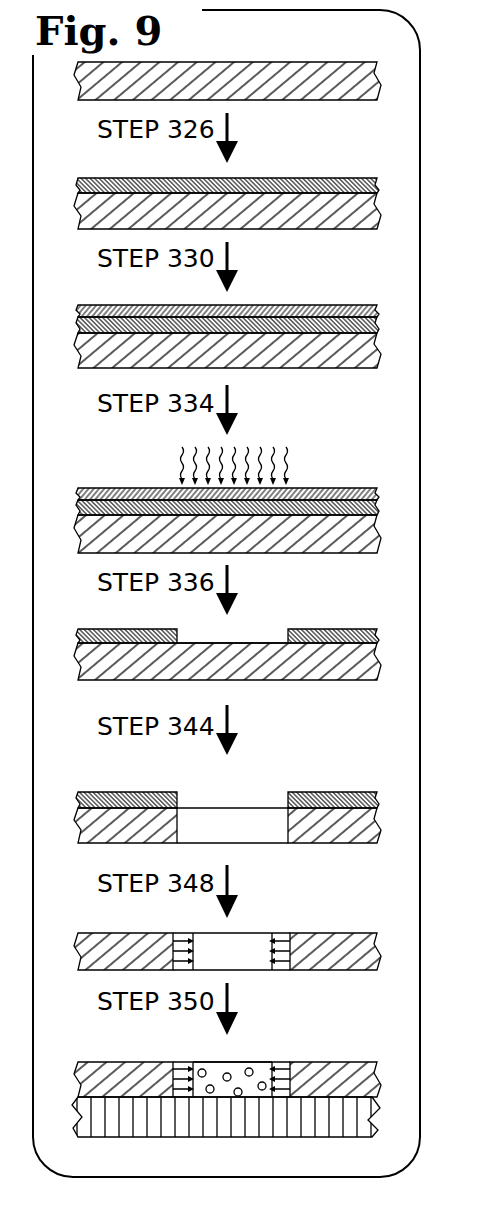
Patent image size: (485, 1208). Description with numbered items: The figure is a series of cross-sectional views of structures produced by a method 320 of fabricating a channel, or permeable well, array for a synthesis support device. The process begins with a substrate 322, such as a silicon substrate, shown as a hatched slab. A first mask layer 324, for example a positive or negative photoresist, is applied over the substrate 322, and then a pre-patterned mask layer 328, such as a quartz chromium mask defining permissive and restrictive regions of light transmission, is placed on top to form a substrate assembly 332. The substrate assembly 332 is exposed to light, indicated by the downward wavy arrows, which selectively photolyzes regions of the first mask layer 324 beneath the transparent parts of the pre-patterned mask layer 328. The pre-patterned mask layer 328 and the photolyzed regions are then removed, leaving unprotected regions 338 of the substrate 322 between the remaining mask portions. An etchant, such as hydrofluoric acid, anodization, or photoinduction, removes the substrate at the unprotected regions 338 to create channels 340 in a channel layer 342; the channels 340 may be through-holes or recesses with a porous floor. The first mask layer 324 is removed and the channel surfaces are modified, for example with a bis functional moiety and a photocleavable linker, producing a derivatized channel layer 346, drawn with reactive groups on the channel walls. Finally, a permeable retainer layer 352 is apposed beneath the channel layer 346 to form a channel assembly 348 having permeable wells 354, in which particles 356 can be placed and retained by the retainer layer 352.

The method 320 is at (288, 54).
The substrate 322 is at (88, 88).
The first mask layer 324 is at (143, 178).
The pre-patterned mask layer 328 is at (143, 306).
The substrate assembly 332 is at (70, 352).
The unprotected regions 338 is at (263, 642).
The channels 340 is at (285, 838).
The channel layer 342 is at (70, 845).
The derivatized channel layer 346 is at (385, 943).
The channel assembly 348 is at (388, 1092).
The permeable retainer layer 352 is at (80, 1124).
The permeable wells 354 is at (247, 1058).
The particles 356 is at (262, 1090).